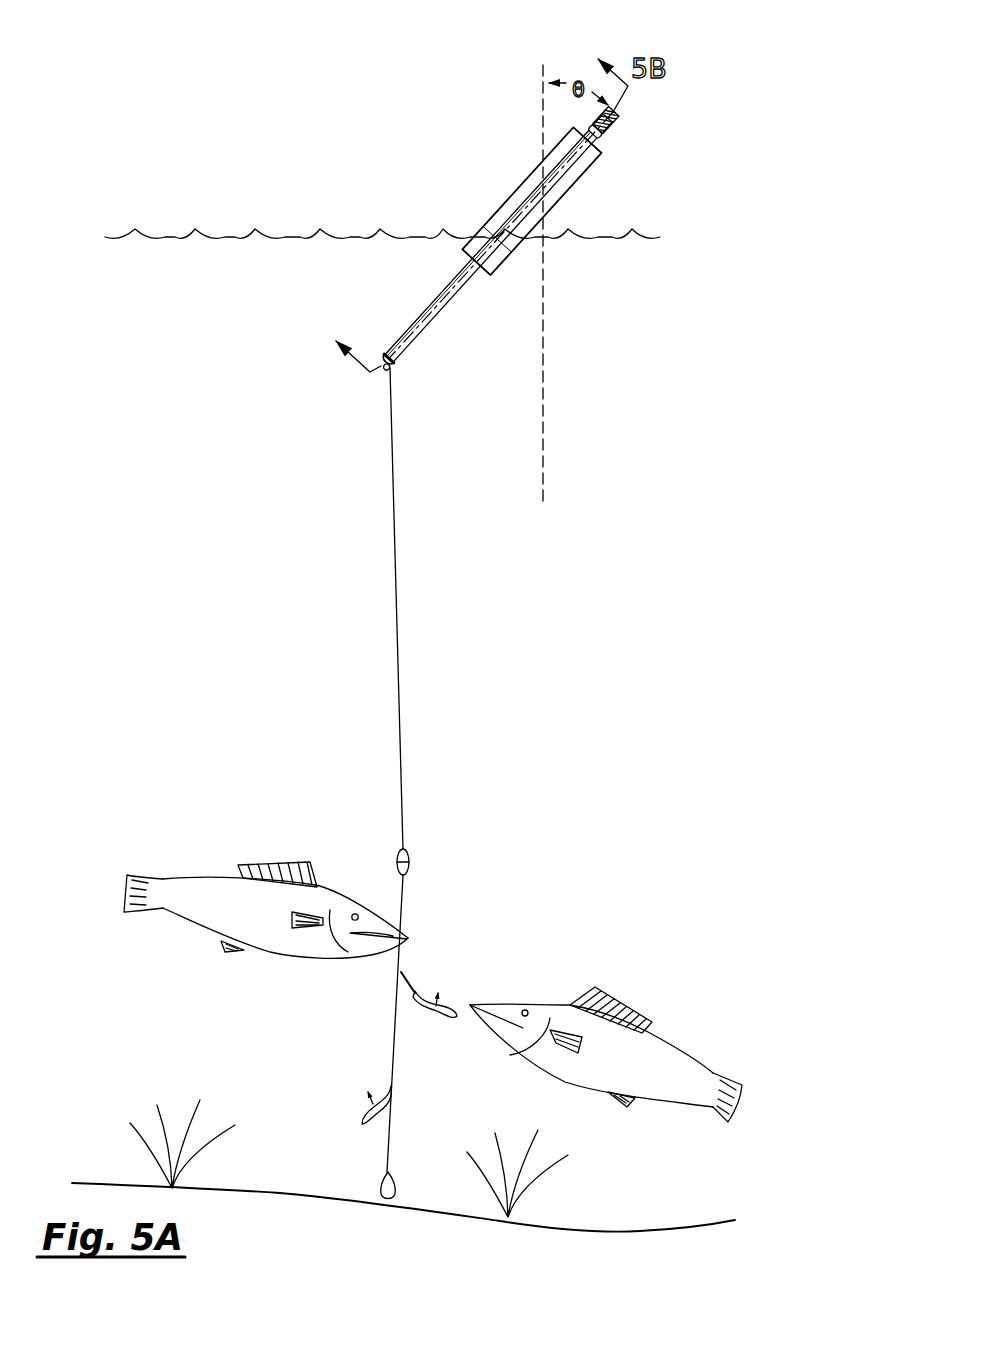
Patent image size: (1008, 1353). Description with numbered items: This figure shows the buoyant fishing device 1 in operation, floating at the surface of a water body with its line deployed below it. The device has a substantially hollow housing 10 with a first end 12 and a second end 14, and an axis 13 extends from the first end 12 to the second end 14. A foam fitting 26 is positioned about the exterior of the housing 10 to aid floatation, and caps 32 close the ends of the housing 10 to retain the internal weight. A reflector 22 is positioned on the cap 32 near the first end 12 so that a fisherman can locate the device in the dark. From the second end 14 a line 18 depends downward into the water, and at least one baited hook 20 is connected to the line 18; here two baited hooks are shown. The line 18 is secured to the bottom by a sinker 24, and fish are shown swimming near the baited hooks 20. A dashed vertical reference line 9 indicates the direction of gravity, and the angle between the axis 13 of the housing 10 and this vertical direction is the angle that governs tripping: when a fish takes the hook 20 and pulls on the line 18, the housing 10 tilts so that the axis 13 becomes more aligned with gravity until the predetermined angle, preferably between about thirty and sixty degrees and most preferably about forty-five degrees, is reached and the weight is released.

The buoyant fishing device 1 is at (447, 150).
The vertical reference line 9 is at (555, 376).
The housing 10 is at (491, 246).
The first end 12 is at (605, 120).
The axis 13 is at (500, 234).
The second end 14 is at (378, 357).
The line 18 is at (403, 624).
The hook 20 is at (408, 982).
The reflector 22 is at (602, 123).
The sinker 24 is at (394, 1180).
The foam fitting 26 is at (609, 119).
The cap 32 is at (489, 247).